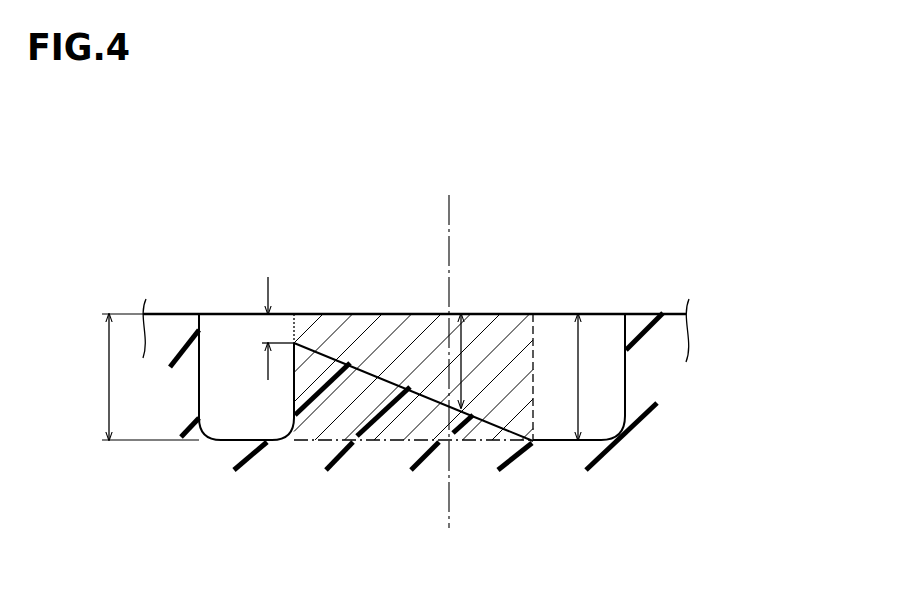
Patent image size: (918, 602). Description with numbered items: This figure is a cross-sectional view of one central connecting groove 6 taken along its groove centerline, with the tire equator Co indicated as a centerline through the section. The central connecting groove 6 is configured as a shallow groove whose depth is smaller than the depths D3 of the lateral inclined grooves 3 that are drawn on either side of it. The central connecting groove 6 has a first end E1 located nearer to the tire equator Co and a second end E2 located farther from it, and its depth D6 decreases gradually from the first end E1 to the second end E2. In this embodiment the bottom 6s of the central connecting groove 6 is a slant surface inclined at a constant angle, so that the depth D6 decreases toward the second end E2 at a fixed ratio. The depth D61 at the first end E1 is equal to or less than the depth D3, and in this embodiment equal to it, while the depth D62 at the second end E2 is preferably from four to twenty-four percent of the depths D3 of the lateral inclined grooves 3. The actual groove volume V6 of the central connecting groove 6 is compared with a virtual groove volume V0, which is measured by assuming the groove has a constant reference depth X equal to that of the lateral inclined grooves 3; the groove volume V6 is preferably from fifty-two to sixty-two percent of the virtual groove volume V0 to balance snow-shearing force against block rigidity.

The lateral inclined groove 3 is at (217, 313).
The central connecting groove 6 is at (409, 311).
The bottom of central connecting groove 6s is at (509, 418).
The depth of lateral inclined groove D3 is at (110, 377).
The depth of central connecting groove D6 is at (489, 314).
The depth at first end D61 is at (603, 314).
The depth at second end D62 is at (255, 314).
The first end E1 is at (556, 313).
The second end E2 is at (295, 315).
The groove volume V6 is at (360, 314).
The virtual groove volume V0 is at (395, 420).
The reference depth X is at (310, 442).
The tire equator Co is at (449, 347).